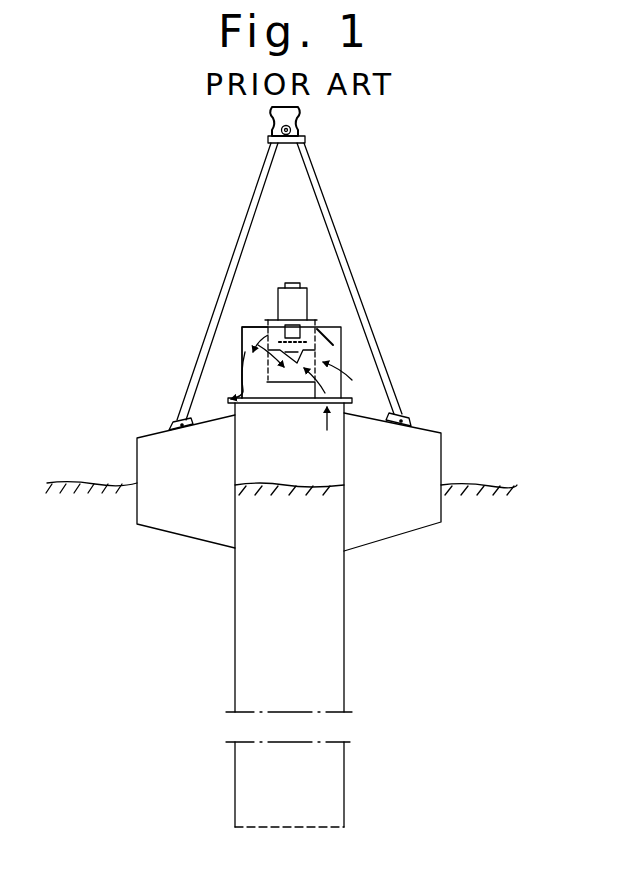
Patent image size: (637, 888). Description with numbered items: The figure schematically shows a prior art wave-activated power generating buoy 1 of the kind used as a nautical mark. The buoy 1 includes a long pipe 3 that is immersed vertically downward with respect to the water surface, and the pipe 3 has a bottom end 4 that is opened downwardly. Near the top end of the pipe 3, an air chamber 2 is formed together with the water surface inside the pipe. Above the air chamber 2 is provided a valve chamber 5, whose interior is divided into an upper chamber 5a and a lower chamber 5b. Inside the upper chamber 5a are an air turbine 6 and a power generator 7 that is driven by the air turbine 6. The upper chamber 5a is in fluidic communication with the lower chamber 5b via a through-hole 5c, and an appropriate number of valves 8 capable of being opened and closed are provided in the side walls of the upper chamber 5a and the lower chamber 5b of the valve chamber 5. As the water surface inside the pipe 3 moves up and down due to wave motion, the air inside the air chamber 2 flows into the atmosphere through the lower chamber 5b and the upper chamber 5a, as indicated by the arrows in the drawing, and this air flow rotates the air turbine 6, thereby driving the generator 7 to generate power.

The wave-activated power generating buoy 1 is at (452, 469).
The air chamber 2 is at (345, 451).
The pipe 3 is at (335, 652).
The bottom end 4 is at (318, 827).
The valve chamber 5 is at (373, 394).
The upper chamber 5a is at (278, 333).
The lower chamber 5b is at (290, 372).
The through-hole 5c is at (305, 348).
The air turbine 6 is at (316, 329).
The power generator 7 is at (293, 325).
The valves 8 is at (266, 336).